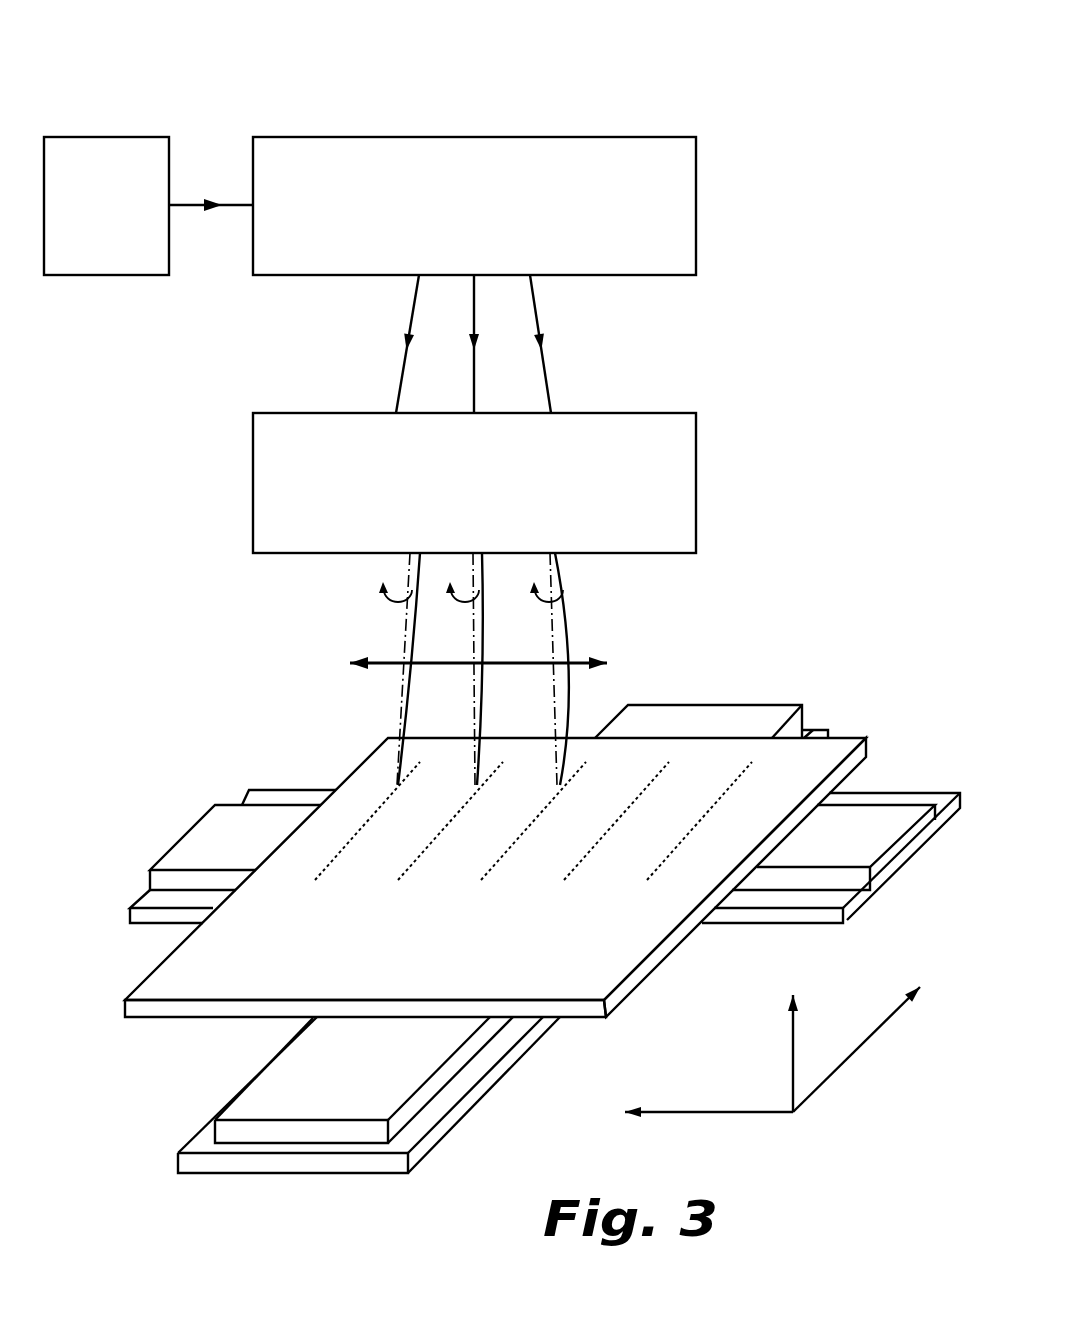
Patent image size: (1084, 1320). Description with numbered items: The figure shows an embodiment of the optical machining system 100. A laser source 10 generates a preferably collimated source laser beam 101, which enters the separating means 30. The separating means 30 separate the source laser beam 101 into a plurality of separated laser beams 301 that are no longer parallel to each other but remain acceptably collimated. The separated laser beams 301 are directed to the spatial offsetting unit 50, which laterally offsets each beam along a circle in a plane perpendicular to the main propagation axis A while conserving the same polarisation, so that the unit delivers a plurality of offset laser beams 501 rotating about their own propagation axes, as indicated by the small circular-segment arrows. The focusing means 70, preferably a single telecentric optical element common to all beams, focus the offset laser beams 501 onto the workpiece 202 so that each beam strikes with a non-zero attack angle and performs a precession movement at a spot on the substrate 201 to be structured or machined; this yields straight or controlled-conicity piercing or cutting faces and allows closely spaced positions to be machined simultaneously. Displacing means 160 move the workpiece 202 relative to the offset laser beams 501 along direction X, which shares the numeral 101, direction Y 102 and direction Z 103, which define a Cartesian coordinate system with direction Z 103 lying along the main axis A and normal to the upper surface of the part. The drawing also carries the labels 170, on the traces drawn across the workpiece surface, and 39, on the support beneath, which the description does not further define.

The optical machining system 100 is at (465, 98).
The laser source 10 is at (102, 135).
The source laser beam 101 is at (187, 202).
The separating means 30 is at (527, 137).
The separated laser beams 301 is at (415, 300).
The spatial offsetting unit 50 is at (696, 479).
The offset laser beams 501 is at (558, 693).
The main propagation axis A is at (553, 622).
The focusing means 70 is at (547, 658).
The workpiece 202 is at (785, 782).
The substrate 201 is at (650, 972).
The processing lines 170 is at (385, 800).
The displacing means 160 is at (173, 825).
The base 39 is at (187, 1149).
The direction Z 103 is at (792, 1037).
The direction Y 102 is at (698, 1113).